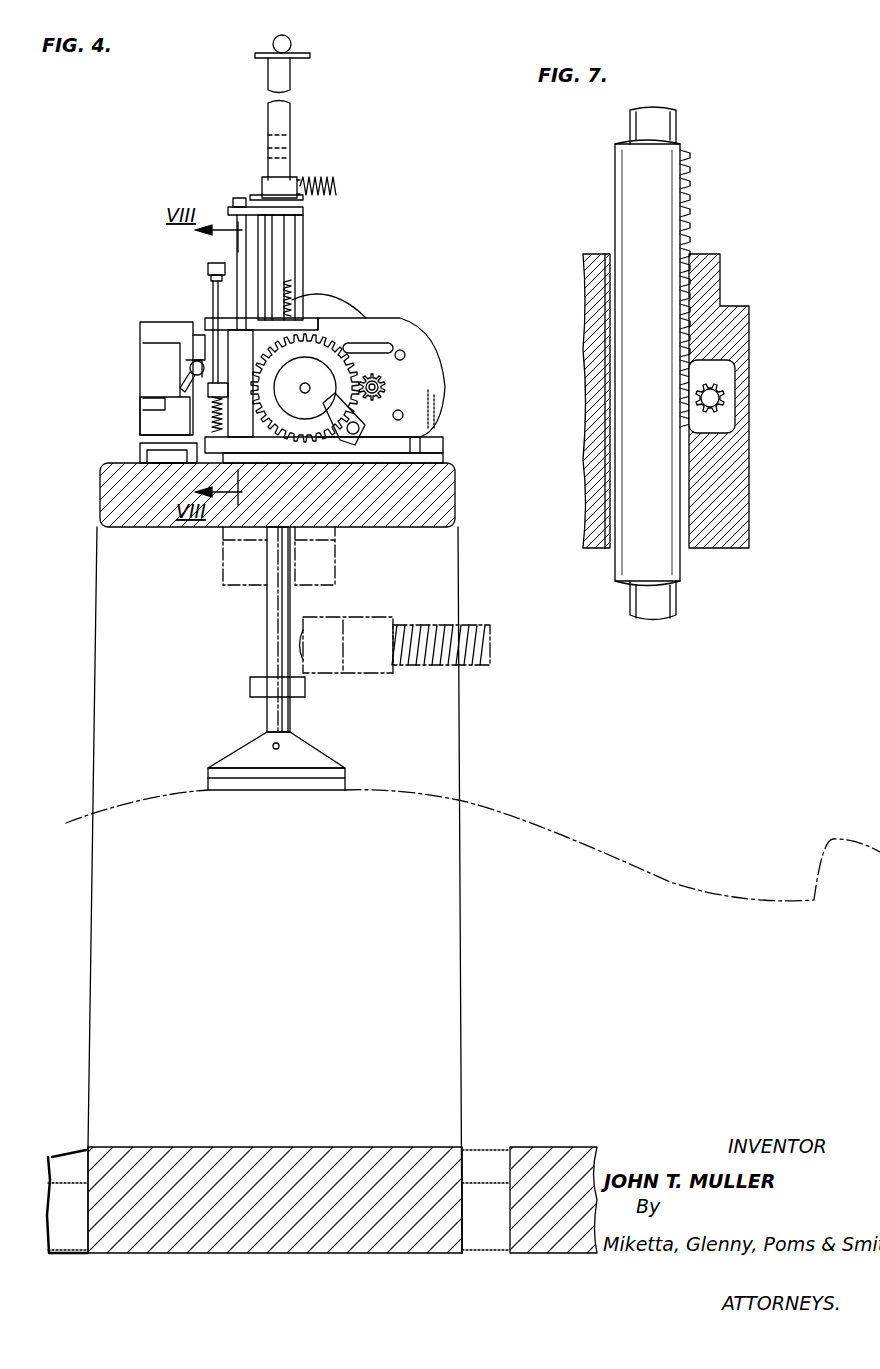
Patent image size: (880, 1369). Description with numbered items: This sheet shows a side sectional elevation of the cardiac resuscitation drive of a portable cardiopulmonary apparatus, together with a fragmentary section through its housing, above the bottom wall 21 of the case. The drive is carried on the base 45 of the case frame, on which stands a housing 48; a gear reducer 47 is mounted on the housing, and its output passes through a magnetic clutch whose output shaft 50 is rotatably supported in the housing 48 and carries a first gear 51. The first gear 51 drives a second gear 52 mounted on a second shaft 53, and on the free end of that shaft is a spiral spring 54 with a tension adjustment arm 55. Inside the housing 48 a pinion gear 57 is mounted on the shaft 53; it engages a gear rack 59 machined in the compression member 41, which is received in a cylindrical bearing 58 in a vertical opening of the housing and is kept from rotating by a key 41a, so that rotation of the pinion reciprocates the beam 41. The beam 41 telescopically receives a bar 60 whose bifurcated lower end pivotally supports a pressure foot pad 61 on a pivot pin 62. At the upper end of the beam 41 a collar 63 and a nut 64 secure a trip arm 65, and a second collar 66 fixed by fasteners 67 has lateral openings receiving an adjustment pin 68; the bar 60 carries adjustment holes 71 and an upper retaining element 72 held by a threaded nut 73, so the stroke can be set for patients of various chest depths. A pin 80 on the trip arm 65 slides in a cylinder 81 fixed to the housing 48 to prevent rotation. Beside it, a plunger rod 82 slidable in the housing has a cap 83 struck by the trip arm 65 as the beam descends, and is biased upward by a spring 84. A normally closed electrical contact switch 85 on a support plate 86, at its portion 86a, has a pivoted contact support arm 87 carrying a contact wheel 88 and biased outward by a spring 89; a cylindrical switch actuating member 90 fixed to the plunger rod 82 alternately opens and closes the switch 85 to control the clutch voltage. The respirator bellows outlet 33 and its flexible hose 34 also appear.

In FIG. 4, the bottom wall 21 is at (245, 1147).
In FIG. 4, the air outlet 33 is at (312, 612).
In FIG. 4, the flexible hose 34 is at (485, 622).
In FIG. 4, the compression member 41 is at (286, 262).
In FIG. 7, the compression member 41 is at (647, 346).
In FIG. 7, the key 41a is at (608, 376).
In FIG. 4, the base 45 is at (432, 500).
In FIG. 4, the gear reducer 47 is at (452, 368).
In FIG. 4, the housing 48 is at (296, 290).
In FIG. 7, the housing 48 is at (740, 328).
In FIG. 4, the output shaft 50 is at (380, 387).
In FIG. 4, the first gear 51 is at (400, 372).
In FIG. 4, the second gear 52 is at (313, 347).
In FIG. 4, the second shaft 53 is at (308, 386).
In FIG. 7, the second shaft 53 is at (718, 408).
In FIG. 4, the spiral spring 54 is at (305, 388).
In FIG. 4, the tension adjustment arm 55 is at (356, 414).
In FIG. 7, the pinion gear 57 is at (738, 380).
In FIG. 7, the cylindrical bearing 58 is at (596, 268).
In FIG. 7, the gear rack 59 is at (692, 230).
In FIG. 4, the bar 60 is at (268, 618).
In FIG. 7, the bar 60 is at (675, 594).
In FIG. 4, the pressure foot pad 61 is at (308, 752).
In FIG. 4, the pivot pin 62 is at (272, 744).
In FIG. 4, the collar 63 is at (288, 235).
In FIG. 4, the nut 64 is at (302, 200).
In FIG. 4, the trip arm 65 is at (236, 207).
In FIG. 4, the second collar 66 is at (288, 178).
In FIG. 4, the fasteners 67 is at (270, 196).
In FIG. 4, the adjustment pin 68 is at (336, 184).
In FIG. 4, the adjustment holes 71 is at (250, 136).
In FIG. 4, the upper retaining element 72 is at (262, 65).
In FIG. 4, the threaded nut 73 is at (292, 42).
In FIG. 4, the pin 80 is at (237, 250).
In FIG. 4, the cylinder 81 is at (240, 336).
In FIG. 4, the plunger rod 82 is at (213, 302).
In FIG. 4, the cap 83 is at (208, 275).
In FIG. 4, the spring 84 is at (210, 420).
In FIG. 4, the electrical contact switch 85 is at (186, 361).
In FIG. 4, the support plate 86 is at (134, 430).
In FIG. 4, the portion of support plate 86a is at (150, 338).
In FIG. 4, the contact support arm 87 is at (190, 368).
In FIG. 4, the contact wheel 88 is at (172, 400).
In FIG. 4, the spring 89 is at (185, 382).
In FIG. 4, the switch actuating member 90 is at (196, 338).